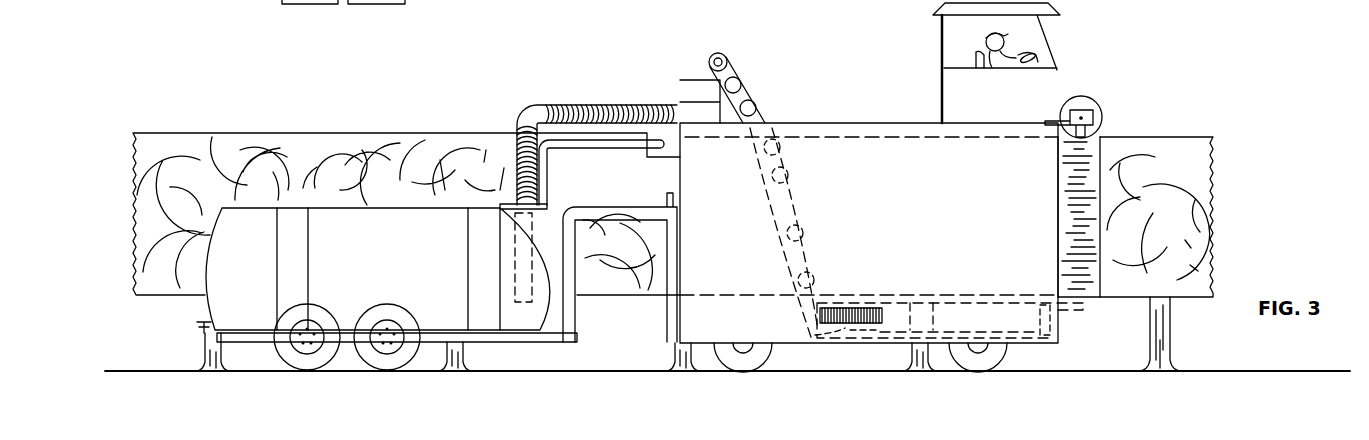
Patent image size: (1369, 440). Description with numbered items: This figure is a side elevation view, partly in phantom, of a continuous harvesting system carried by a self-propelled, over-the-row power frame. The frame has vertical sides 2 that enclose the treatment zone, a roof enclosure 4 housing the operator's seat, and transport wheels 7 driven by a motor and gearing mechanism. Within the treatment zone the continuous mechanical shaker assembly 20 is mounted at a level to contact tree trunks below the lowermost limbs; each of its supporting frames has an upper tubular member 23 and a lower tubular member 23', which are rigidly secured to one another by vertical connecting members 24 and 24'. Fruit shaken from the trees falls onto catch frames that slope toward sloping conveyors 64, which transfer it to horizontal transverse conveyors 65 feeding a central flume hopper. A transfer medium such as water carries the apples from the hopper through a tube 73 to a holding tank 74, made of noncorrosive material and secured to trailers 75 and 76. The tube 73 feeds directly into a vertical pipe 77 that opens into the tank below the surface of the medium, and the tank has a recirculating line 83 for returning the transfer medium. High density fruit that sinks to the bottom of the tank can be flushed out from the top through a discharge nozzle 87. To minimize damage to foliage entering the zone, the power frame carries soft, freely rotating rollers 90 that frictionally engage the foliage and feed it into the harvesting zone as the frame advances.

The vertical sides 2 is at (795, 340).
The roof enclosure 4 is at (1047, 30).
The transport wheels 7 is at (760, 352).
The continuous mechanical shaker assembly 20 is at (937, 316).
The upper tubular member 23 is at (950, 307).
The lower tubular member 23' is at (960, 322).
The vertical connecting member 24 is at (826, 320).
The vertical connecting member 24' is at (1067, 320).
The sloping conveyor 64 is at (730, 70).
The horizontal transverse conveyor 65 is at (679, 95).
The tube 73 is at (566, 105).
The holding tank 74 is at (347, 325).
The trailer 75 is at (577, 336).
The trailer 76 is at (277, 290).
The vertical pipe 77 is at (515, 243).
The recirculating line 83 is at (539, 192).
The discharge nozzle 87 is at (200, 325).
The rollers 90 is at (1100, 132).